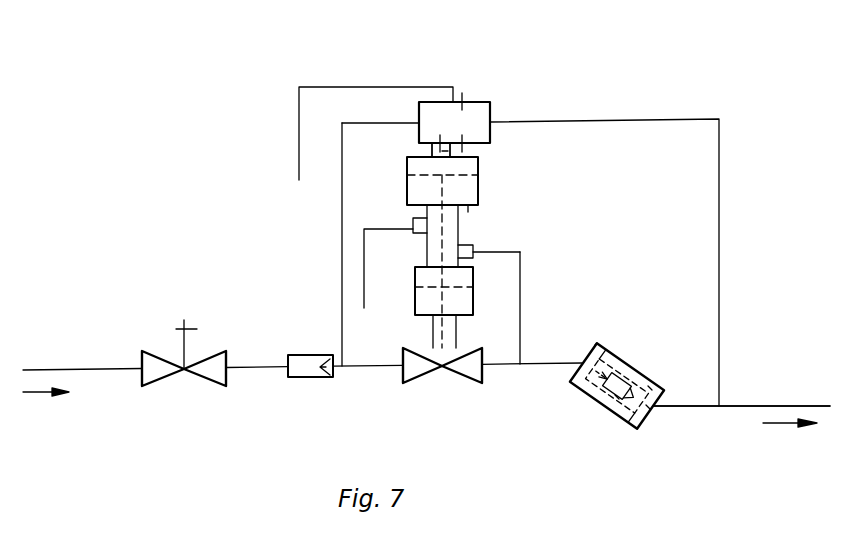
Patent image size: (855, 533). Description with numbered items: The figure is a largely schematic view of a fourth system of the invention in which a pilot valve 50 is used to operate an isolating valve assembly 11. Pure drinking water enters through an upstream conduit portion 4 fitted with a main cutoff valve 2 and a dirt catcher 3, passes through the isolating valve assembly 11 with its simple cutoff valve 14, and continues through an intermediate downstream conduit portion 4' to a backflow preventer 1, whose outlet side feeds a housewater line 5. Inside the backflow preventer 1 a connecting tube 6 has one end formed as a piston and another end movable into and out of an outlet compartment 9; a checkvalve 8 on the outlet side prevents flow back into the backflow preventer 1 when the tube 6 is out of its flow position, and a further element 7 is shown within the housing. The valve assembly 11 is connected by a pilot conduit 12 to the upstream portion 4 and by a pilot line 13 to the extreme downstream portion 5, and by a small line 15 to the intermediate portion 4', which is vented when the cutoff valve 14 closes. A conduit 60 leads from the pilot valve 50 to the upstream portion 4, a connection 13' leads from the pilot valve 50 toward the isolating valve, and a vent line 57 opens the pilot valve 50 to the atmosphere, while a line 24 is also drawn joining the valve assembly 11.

The backflow preventer 1 is at (637, 367).
The main cutoff valve 2 is at (205, 375).
The dirt catcher 3 is at (297, 376).
The upstream conduit portion 4 is at (347, 282).
The downstream conduit portion 4' is at (518, 342).
The housewater line 5 is at (788, 406).
The connecting tube 6 is at (617, 397).
The inlet port 7 is at (608, 353).
The checkvalve 8 is at (648, 407).
The outlet compartment 9 is at (650, 388).
The isolating valve assembly 11 is at (470, 230).
The pilot conduit 12 is at (443, 340).
The pilot line 13 is at (604, 227).
The connection 13' is at (499, 146).
The cutoff valve 14 is at (468, 372).
The small line 15 is at (520, 278).
The control line 24 is at (364, 265).
The pilot valve 50 is at (475, 108).
The vent line 57 is at (378, 86).
The conduit 60 is at (342, 200).